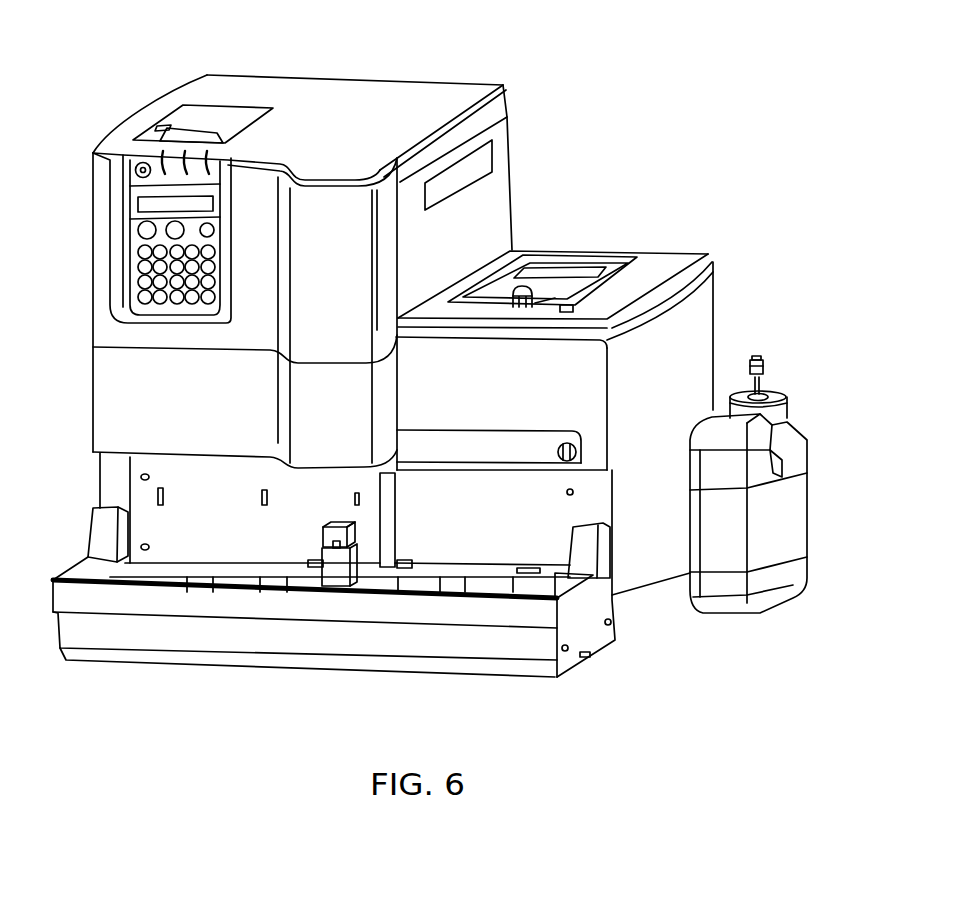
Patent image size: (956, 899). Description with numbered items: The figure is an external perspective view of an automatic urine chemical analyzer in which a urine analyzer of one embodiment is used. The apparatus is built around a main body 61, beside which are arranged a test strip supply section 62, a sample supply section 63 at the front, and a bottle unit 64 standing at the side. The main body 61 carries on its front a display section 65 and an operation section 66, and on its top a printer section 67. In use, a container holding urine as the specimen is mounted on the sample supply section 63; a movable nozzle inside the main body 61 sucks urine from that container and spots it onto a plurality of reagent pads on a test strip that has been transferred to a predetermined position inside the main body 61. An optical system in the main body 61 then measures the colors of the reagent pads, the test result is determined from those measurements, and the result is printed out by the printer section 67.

The main body 61 is at (337, 77).
The test strip supply section 62 is at (543, 290).
The sample supply section 63 is at (353, 598).
The bottle unit 64 is at (798, 420).
The display section 65 is at (137, 206).
The operation section 66 is at (137, 269).
The printer section 67 is at (198, 125).